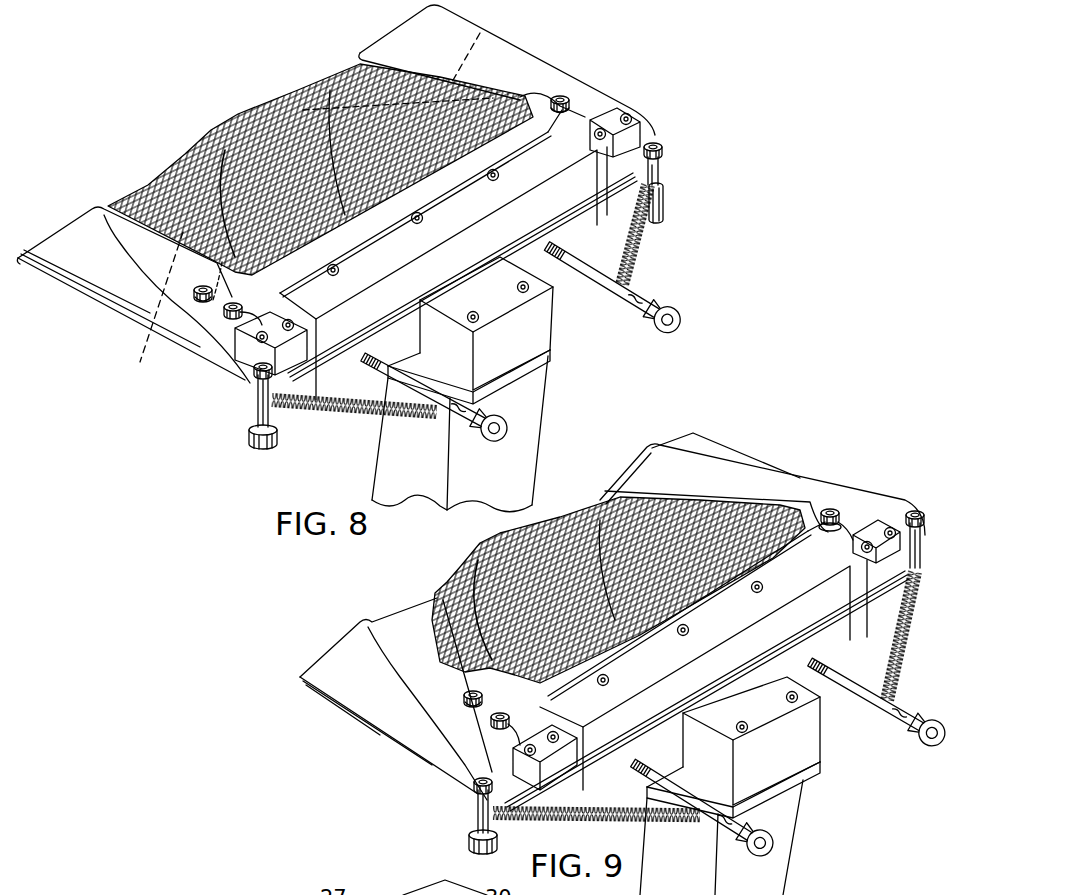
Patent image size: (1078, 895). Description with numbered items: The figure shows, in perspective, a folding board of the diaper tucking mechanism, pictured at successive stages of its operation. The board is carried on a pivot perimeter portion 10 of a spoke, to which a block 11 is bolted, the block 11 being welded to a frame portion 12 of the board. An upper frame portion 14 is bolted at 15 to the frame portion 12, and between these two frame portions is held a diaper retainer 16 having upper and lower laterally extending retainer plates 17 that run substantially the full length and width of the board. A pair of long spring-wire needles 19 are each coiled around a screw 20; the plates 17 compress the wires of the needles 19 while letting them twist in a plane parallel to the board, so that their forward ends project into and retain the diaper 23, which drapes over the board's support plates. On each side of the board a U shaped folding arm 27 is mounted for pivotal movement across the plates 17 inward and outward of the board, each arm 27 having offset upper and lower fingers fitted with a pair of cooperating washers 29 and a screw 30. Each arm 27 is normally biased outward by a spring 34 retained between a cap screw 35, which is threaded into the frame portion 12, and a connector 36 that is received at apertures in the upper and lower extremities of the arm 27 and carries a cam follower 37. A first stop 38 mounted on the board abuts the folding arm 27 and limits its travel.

In FIG. 8, the perimeter portion 10 is at (398, 472).
In FIG. 9, the perimeter portion 10 is at (660, 875).
In FIG. 8, the block 11 is at (543, 313).
In FIG. 9, the block 11 is at (751, 741).
In FIG. 8, the frame portion 12 is at (580, 243).
In FIG. 9, the frame portion 12 is at (826, 649).
In FIG. 8, the upper frame portion 14 is at (580, 178).
In FIG. 9, the upper frame portion 14 is at (703, 656).
In FIG. 8, the bolts 15 is at (500, 175).
In FIG. 9, the bolts 15 is at (680, 634).
In FIG. 9, the diaper retainer 16 is at (378, 733).
In FIG. 8, the retainer plates 17 is at (157, 250).
In FIG. 9, the retainer plates 17 is at (350, 683).
In FIG. 8, the needles 19 is at (480, 33).
In FIG. 8, the screw 20 is at (203, 300).
In FIG. 8, the diaper 23 is at (305, 95).
In FIG. 9, the diaper 23 is at (733, 517).
In FIG. 8, the U shaped arm 27 is at (93, 252).
In FIG. 9, the U shaped arm 27 is at (670, 479).
In FIG. 9, the washers 29 is at (848, 512).
In FIG. 9, the screw 30 is at (830, 503).
In FIG. 8, the spring 34 is at (350, 413).
In FIG. 9, the spring 34 is at (707, 697).
In FIG. 8, the cap screw 35 is at (498, 422).
In FIG. 9, the cap screw 35 is at (905, 737).
In FIG. 8, the connector 36 is at (665, 152).
In FIG. 9, the connector 36 is at (925, 555).
In FIG. 8, the cam follower 37 is at (253, 450).
In FIG. 9, the cam follower 37 is at (477, 862).
In FIG. 8, the first stop 38 is at (278, 364).
In FIG. 9, the first stop 38 is at (567, 745).